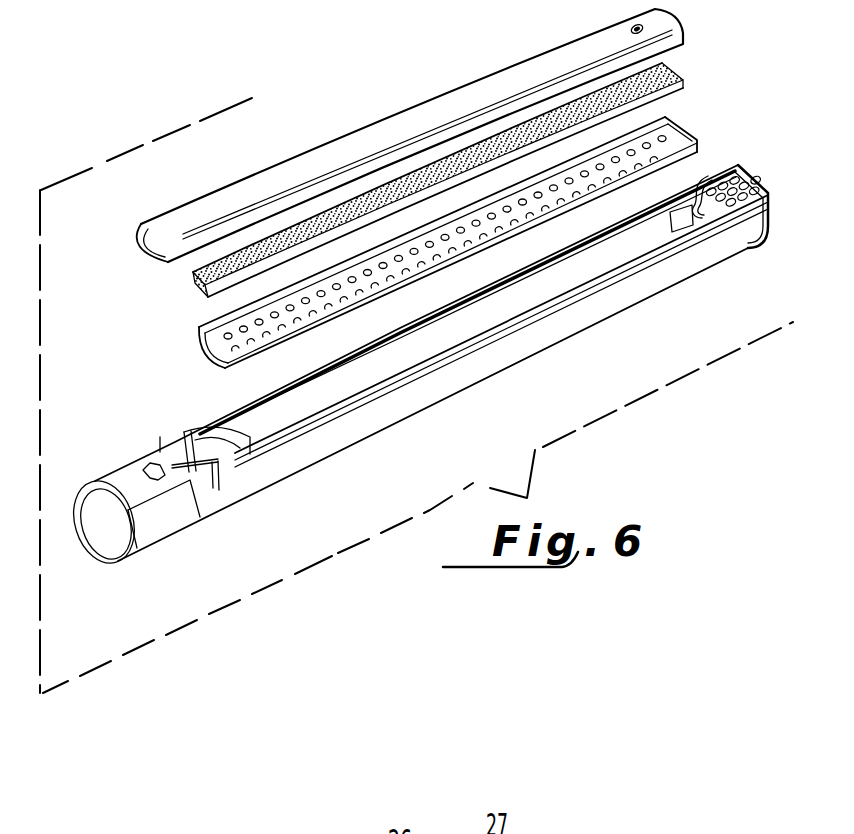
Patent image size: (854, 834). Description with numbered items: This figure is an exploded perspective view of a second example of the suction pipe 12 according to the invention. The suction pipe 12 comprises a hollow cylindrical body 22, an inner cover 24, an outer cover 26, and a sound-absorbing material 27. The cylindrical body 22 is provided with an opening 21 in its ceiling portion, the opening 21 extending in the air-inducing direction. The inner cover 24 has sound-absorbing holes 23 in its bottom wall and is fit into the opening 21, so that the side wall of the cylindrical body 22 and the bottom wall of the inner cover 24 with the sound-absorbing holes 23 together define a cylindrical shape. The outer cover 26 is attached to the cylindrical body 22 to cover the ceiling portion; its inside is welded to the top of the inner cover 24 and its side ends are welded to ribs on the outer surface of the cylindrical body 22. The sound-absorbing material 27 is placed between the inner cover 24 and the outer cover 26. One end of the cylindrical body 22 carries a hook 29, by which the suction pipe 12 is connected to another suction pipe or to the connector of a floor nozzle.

The suction pipe 12 is at (352, 122).
The opening 21 is at (486, 318).
The hollow cylindrical body 22 is at (393, 410).
The sound-absorbing holes 23 is at (280, 317).
The inner cover 24 is at (688, 128).
The outer cover 26 is at (450, 108).
The sound-absorbing material 27 is at (663, 70).
The hook 29 is at (712, 197).